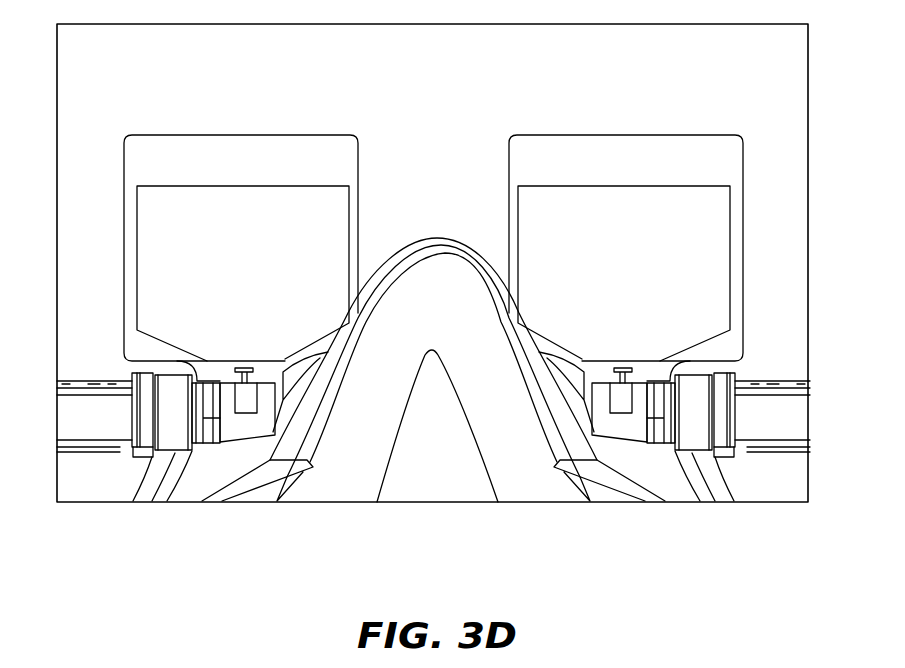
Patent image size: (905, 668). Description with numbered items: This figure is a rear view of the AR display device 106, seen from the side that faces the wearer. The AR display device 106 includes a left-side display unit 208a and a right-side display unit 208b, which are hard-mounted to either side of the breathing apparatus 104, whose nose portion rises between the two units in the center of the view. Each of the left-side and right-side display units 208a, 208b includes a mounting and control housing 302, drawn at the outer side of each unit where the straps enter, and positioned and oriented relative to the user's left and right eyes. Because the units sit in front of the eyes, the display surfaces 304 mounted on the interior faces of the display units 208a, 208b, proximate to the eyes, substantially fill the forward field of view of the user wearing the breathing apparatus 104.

The AR display device 106 is at (132, 118).
The left-side display unit 208a is at (213, 155).
The right-side display unit 208b is at (713, 163).
The display surface 304 is at (255, 250).
The breathing apparatus 104 is at (430, 292).
The mounting and control housing 302 is at (103, 415).